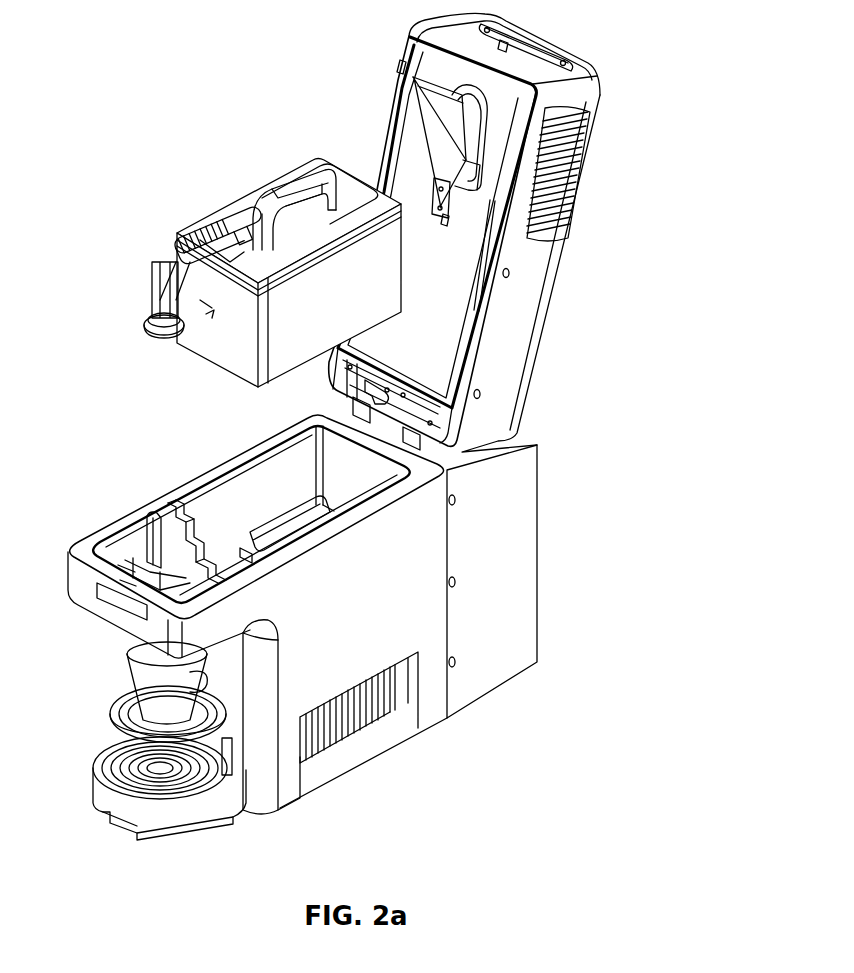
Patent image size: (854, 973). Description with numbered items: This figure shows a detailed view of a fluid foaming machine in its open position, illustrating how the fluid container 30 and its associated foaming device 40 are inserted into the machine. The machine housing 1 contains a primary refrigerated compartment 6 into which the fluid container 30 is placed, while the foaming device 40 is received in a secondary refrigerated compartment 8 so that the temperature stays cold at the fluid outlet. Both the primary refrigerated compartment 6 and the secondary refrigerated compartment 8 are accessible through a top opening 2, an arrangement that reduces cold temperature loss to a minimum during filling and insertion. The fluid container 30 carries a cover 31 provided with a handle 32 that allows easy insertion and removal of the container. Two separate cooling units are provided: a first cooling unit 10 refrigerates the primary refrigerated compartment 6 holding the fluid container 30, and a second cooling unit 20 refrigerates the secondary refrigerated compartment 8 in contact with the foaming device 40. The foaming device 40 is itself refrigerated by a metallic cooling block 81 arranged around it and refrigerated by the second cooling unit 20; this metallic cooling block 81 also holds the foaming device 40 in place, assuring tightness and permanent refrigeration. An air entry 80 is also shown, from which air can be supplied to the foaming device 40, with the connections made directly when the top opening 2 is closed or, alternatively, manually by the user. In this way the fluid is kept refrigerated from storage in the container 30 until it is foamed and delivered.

The machine housing 1 is at (382, 590).
The top opening 2 is at (507, 353).
The primary refrigerated compartment 6 is at (347, 460).
The secondary refrigerated compartment 8 is at (153, 573).
The first cooling unit 10 is at (347, 730).
The second cooling unit 20 is at (575, 158).
The fluid container 30 is at (370, 300).
The cover 31 is at (233, 210).
The handle 32 is at (293, 187).
The foaming device 40 is at (157, 293).
The air entry 80 is at (438, 200).
The metallic cooling block 81 is at (453, 132).